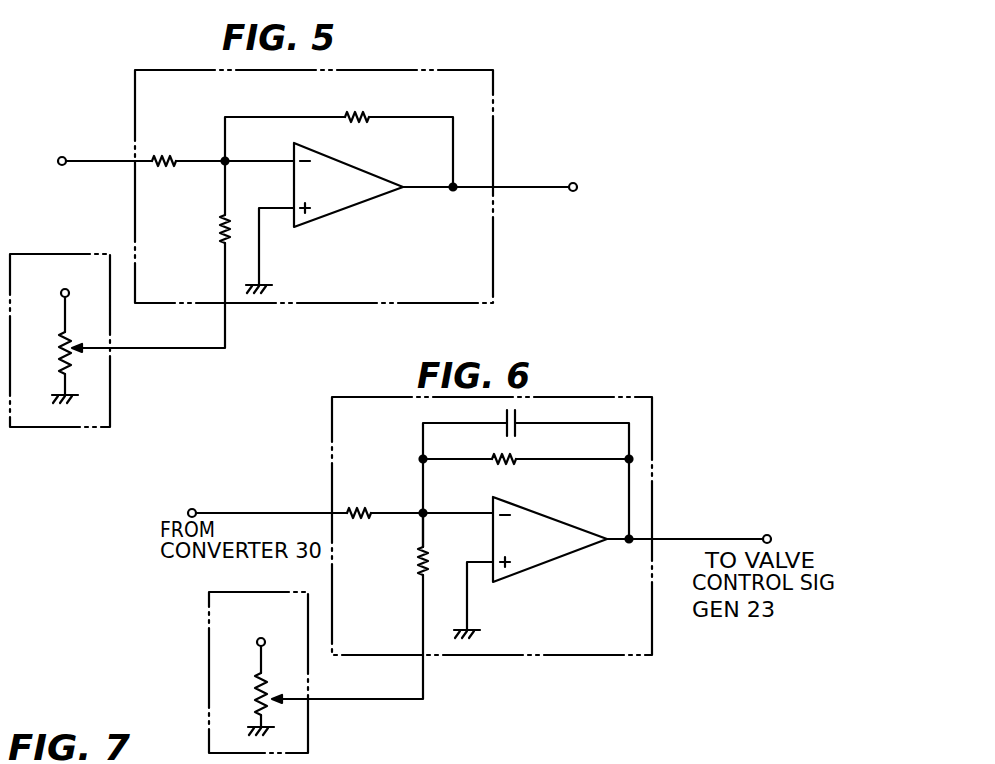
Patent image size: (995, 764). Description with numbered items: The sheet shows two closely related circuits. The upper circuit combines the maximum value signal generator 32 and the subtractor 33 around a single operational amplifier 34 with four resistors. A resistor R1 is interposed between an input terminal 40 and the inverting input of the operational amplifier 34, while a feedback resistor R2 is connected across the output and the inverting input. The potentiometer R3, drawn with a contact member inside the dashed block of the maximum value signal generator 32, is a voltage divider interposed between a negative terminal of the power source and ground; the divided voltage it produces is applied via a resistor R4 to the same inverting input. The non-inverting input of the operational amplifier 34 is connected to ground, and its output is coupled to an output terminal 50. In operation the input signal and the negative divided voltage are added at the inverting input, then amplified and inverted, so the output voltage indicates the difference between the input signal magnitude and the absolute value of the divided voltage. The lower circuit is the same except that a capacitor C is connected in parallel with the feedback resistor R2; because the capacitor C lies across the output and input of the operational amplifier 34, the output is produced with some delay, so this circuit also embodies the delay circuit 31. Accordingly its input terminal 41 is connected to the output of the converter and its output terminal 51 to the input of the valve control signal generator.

In FIG. 5, the input terminal 40 is at (63, 157).
In FIG. 5, the output terminal 50 is at (577, 183).
In FIG. 5, the subtractor 33 is at (494, 230).
In FIG. 6, the subtractor 33 is at (653, 430).
In FIG. 5, the operational amplifier 34 is at (360, 203).
In FIG. 6, the operational amplifier 34 is at (555, 520).
In FIG. 5, the maximum value signal generator 32 is at (95, 340).
In FIG. 6, the maximum value signal generator 32 is at (290, 672).
In FIG. 5, the resistor R1 is at (160, 159).
In FIG. 6, the resistor R1 is at (362, 510).
In FIG. 5, the feedback resistor R2 is at (352, 114).
In FIG. 6, the feedback resistor R2 is at (508, 466).
In FIG. 5, the potentiometer R3 is at (44, 353).
In FIG. 6, the potentiometer R3 is at (241, 694).
In FIG. 5, the resistor R4 is at (220, 232).
In FIG. 6, the resistor R4 is at (417, 560).
In FIG. 6, the input terminal 41 is at (196, 509).
In FIG. 6, the output terminal 51 is at (768, 534).
In FIG. 6, the delay circuit 31 is at (542, 526).
In FIG. 6, the capacitor C is at (512, 437).